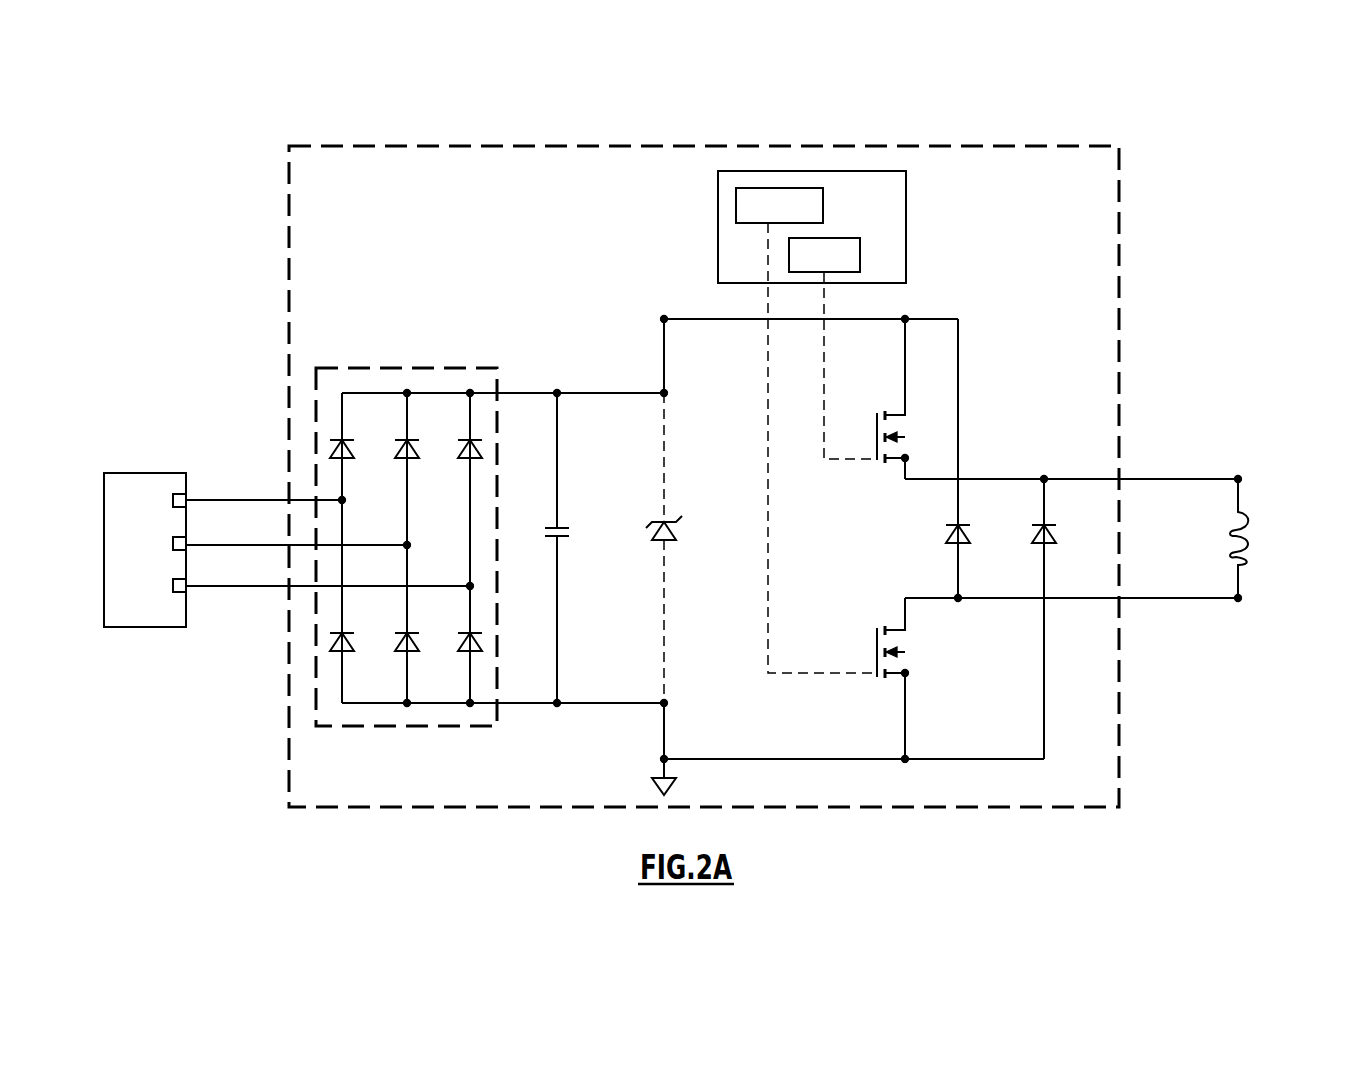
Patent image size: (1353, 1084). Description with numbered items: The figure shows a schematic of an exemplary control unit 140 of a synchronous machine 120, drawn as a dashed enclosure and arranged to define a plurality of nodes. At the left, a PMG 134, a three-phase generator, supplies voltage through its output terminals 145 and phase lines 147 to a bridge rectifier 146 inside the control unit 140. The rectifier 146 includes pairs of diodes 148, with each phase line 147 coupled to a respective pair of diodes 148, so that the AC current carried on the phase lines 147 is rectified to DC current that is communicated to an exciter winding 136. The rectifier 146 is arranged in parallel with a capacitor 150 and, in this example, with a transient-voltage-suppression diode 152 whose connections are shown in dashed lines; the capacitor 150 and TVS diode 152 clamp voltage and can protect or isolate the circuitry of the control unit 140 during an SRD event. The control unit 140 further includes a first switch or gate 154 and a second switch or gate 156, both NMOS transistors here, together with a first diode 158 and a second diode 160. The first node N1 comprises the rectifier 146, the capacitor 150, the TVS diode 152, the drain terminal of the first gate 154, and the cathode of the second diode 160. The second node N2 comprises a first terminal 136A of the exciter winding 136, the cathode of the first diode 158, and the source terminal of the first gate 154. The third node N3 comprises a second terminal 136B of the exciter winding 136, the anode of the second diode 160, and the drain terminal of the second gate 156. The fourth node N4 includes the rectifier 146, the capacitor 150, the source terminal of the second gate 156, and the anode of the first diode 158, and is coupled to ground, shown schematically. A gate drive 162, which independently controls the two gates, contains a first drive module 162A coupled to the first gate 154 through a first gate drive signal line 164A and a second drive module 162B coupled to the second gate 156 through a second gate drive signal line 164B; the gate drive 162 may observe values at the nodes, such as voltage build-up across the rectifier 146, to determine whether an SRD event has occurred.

The synchronous machine 120 is at (138, 108).
The PMG 134 is at (161, 565).
The exciter winding 136 is at (1288, 540).
The first terminal 136A is at (1240, 478).
The second terminal 136B is at (1240, 600).
The control unit 140 is at (323, 136).
The output terminals 145 is at (173, 537).
The bridge rectifier 146 is at (388, 358).
The phase lines 147 is at (273, 586).
The diodes 148 is at (401, 440).
The capacitor 150 is at (552, 526).
The transient-voltage-suppression (TVS) diode 152 is at (657, 521).
The first switch or gate 154 is at (907, 448).
The second switch or gate 156 is at (907, 673).
The first diode 158 is at (1050, 522).
The second diode 160 is at (963, 522).
The gate drive 162 is at (801, 227).
The first drive module 162A is at (823, 203).
The second drive module 162B is at (860, 256).
The first gate drive signal line 164A is at (826, 380).
The second gate drive signal line 164B is at (768, 402).
The first node N1 is at (664, 319).
The second node N2 is at (1044, 479).
The third node N3 is at (958, 598).
The fourth node N4 is at (667, 703).